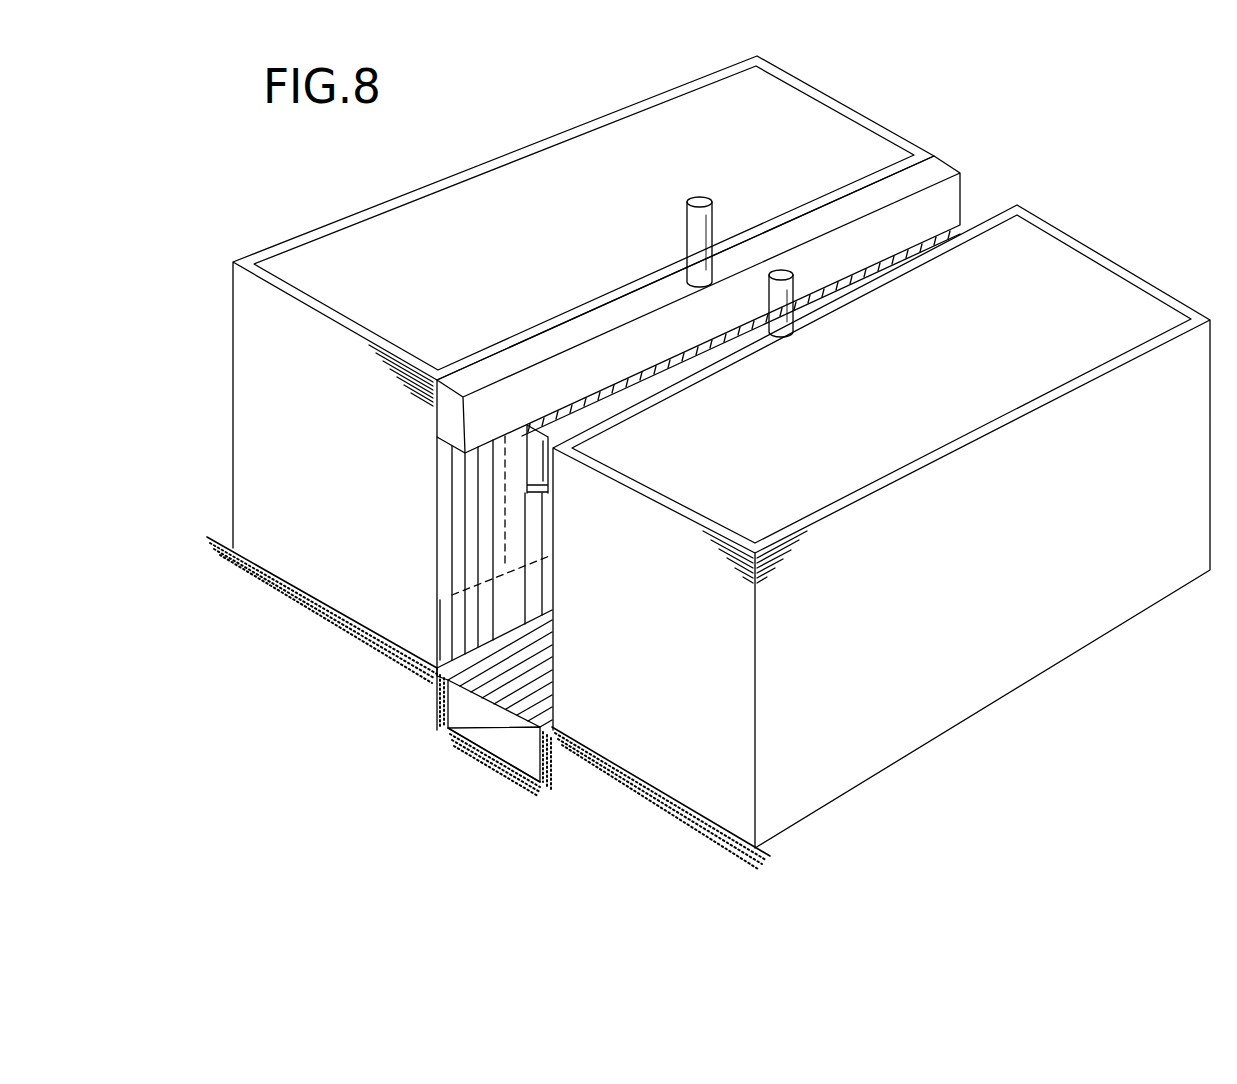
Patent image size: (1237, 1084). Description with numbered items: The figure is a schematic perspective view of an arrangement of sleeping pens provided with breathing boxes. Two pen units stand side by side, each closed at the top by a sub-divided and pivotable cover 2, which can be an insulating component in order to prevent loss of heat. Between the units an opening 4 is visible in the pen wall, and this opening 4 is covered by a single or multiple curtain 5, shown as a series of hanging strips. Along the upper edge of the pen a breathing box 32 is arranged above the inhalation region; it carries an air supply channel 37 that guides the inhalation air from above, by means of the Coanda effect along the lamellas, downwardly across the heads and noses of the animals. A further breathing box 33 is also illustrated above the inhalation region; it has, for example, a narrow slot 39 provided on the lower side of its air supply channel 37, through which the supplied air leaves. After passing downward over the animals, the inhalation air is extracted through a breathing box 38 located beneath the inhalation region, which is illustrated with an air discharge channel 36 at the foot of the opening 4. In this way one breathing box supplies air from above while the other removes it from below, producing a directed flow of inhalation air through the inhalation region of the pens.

The cover 2 is at (721, 452).
The opening 4 is at (452, 572).
The curtain 5 is at (452, 512).
The breathing box 32 is at (958, 171).
The breathing box 33 is at (999, 208).
The air discharge channel 36 is at (487, 738).
The air supply channel 37 is at (487, 372).
The breathing box 38 is at (437, 706).
The narrow slot 39 is at (533, 494).